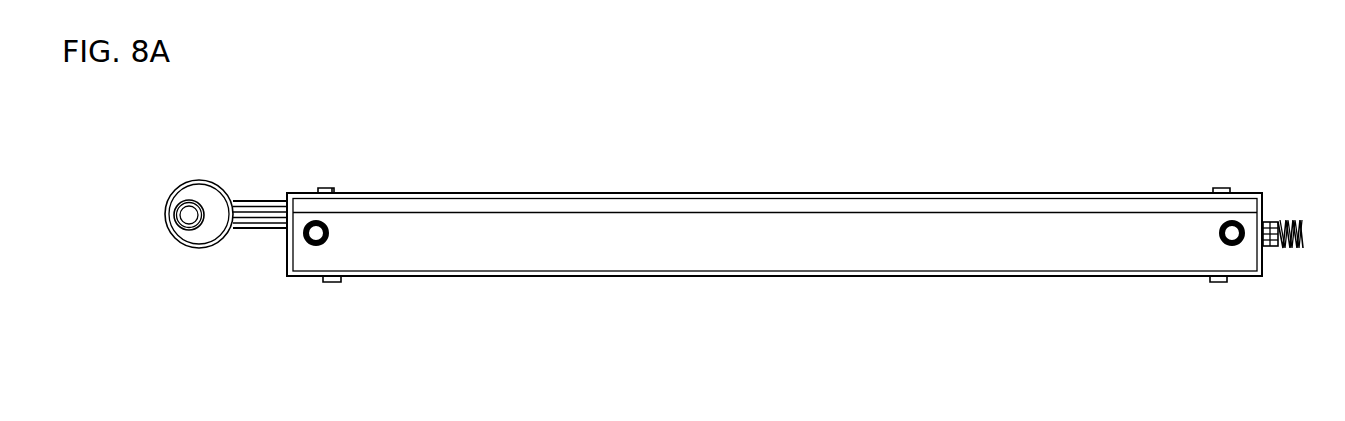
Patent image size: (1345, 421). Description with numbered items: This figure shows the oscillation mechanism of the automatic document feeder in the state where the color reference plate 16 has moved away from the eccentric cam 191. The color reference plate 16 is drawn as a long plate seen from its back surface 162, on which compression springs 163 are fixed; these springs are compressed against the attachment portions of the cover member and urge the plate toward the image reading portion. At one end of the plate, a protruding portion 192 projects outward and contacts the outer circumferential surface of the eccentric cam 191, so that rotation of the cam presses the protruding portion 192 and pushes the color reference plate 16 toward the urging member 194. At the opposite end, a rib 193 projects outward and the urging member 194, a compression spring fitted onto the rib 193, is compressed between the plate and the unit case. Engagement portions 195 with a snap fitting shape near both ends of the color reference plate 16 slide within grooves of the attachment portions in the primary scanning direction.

The color reference plate 16 is at (518, 279).
The back surface 162 is at (417, 256).
The compression springs 163 is at (330, 232).
The eccentric cam 191 is at (193, 249).
The protruding portion 192 is at (273, 230).
The rib 193 is at (1273, 219).
The urging member 194 is at (1300, 250).
The engagement portions 195 is at (328, 186).